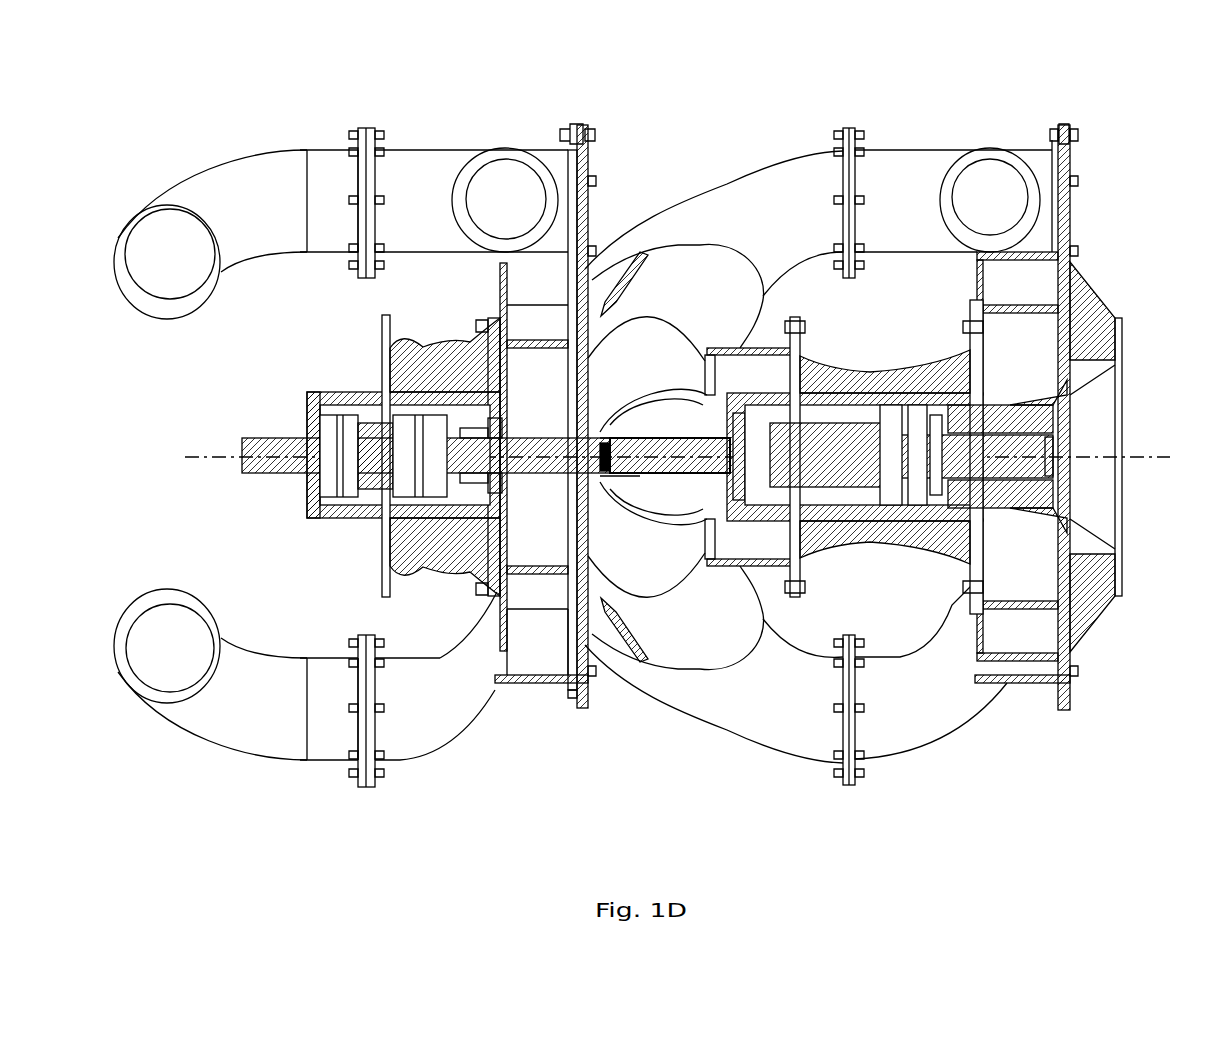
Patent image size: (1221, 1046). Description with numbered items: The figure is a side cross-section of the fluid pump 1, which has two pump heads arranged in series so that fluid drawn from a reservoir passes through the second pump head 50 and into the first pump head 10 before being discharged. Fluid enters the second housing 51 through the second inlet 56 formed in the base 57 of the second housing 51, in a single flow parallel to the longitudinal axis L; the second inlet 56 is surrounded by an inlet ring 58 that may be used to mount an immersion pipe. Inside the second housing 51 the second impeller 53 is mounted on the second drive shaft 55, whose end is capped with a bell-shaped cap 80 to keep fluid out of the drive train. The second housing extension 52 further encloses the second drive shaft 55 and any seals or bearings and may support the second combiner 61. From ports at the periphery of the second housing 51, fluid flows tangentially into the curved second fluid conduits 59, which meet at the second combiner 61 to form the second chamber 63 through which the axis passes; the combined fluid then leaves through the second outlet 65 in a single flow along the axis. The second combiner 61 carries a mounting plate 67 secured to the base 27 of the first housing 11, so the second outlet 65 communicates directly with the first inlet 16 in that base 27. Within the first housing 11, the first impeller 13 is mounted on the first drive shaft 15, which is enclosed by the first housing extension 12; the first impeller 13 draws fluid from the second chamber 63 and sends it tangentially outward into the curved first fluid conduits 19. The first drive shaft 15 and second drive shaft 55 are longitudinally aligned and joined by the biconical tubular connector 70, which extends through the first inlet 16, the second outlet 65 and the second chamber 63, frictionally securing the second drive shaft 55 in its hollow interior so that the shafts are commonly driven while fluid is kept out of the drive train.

The fluid pump 1 is at (630, 22).
The first pump head 10 is at (432, 115).
The first housing 11 is at (552, 278).
The first housing extension 12 is at (432, 540).
The first impeller 13 is at (546, 625).
The first drive shaft 15 is at (262, 472).
The first inlet 16 is at (595, 400).
The first fluid conduits 19 is at (326, 162).
The base 27 is at (570, 138).
The second pump head 50 is at (905, 117).
The second housing 51 is at (1030, 292).
The second housing extension 52 is at (873, 376).
The second impeller 53 is at (1033, 633).
The second drive shaft 55 is at (1036, 470).
The second inlet 56 is at (1068, 443).
The base 57 is at (1050, 140).
The inlet ring 58 is at (1108, 552).
The second fluid conduits 59 is at (800, 170).
The second combiner 61 is at (645, 550).
The second chamber 63 is at (665, 534).
The second outlet 65 is at (588, 498).
The mounting plate 67 is at (597, 138).
The biconical tubular connector 70 is at (600, 428).
The bell-shaped cap 80 is at (1040, 420).